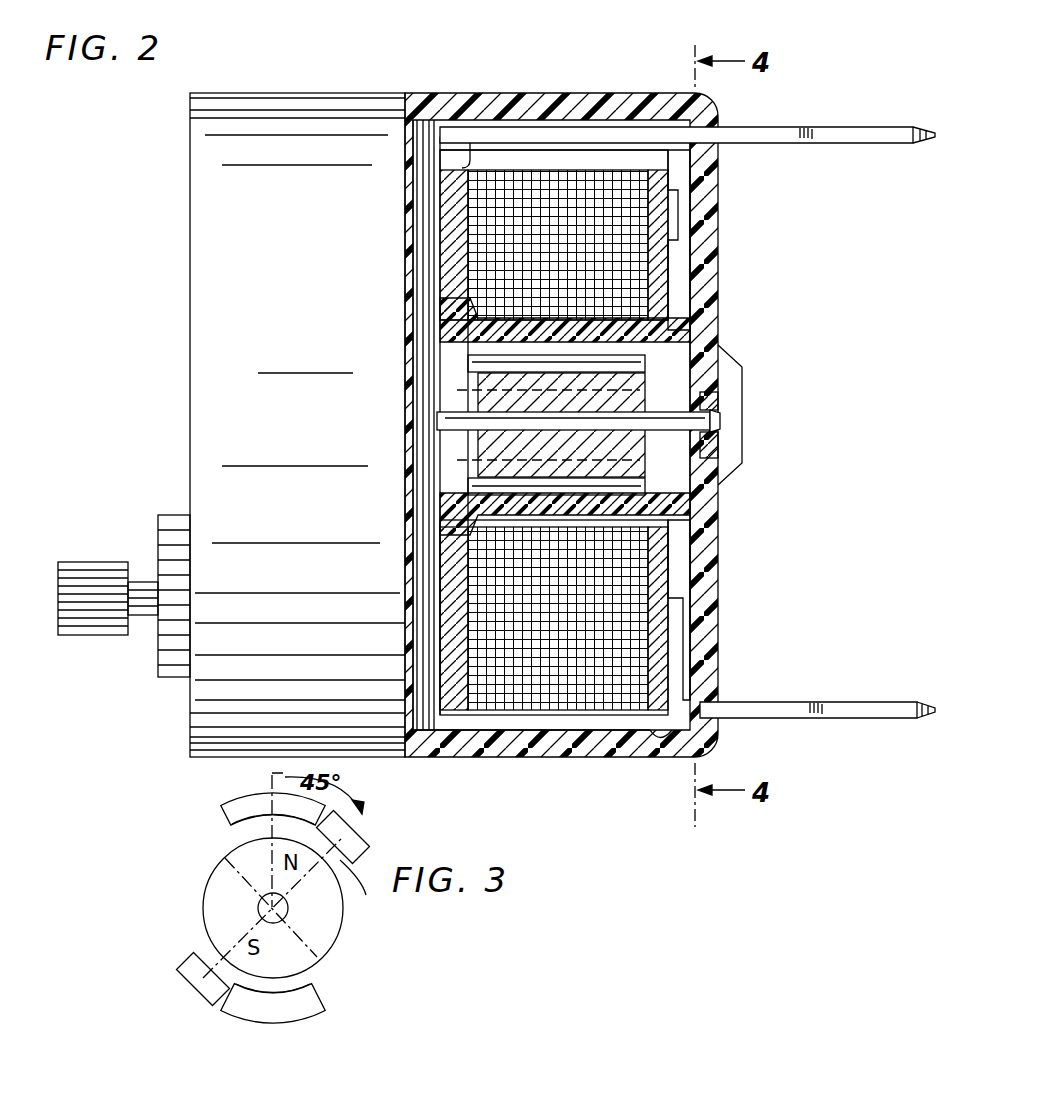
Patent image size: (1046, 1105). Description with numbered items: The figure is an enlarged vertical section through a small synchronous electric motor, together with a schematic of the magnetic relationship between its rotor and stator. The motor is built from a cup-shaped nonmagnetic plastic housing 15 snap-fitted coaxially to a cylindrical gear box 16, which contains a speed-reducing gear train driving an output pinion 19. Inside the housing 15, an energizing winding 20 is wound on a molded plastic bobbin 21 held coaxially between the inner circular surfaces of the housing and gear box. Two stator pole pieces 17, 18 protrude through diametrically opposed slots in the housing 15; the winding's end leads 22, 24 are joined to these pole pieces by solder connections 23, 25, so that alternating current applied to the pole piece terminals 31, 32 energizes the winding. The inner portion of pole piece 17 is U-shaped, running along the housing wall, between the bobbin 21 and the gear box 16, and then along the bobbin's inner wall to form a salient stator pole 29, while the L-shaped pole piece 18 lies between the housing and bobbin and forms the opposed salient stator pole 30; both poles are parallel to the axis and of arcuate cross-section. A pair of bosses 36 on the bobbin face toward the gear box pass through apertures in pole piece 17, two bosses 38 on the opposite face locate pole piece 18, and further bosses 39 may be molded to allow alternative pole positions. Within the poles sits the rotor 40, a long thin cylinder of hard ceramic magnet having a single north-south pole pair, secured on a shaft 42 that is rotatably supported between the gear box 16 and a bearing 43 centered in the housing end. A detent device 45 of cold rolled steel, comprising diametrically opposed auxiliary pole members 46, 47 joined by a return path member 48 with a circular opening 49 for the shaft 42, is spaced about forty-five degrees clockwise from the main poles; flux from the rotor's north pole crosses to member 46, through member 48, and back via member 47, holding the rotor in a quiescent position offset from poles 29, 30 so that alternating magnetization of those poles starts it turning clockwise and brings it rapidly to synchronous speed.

In FIG. 2, the housing 15 is at (576, 92).
In FIG. 2, the gear box 16 is at (312, 96).
In FIG. 2, the stator pole piece 17 is at (826, 125).
In FIG. 3, the stator pole piece 17 is at (242, 796).
In FIG. 2, the stator pole piece 18 is at (846, 700).
In FIG. 3, the stator pole piece 18 is at (308, 1021).
In FIG. 2, the output pinion 19 is at (98, 562).
In FIG. 2, the energizing winding 20 is at (545, 180).
In FIG. 2, the bobbin 21 is at (655, 160).
In FIG. 2, the end lead 22 is at (476, 160).
In FIG. 2, the solder connection 23 is at (460, 162).
In FIG. 2, the end lead 24 is at (650, 722).
In FIG. 2, the solder connection 25 is at (684, 748).
In FIG. 2, the salient stator pole 29 is at (705, 305).
In FIG. 3, the salient stator pole 29 is at (237, 815).
In FIG. 2, the salient stator pole 30 is at (683, 512).
In FIG. 3, the salient stator pole 30 is at (232, 1016).
In FIG. 2, the pole piece terminal 31 is at (918, 128).
In FIG. 2, the pole piece terminal 32 is at (930, 700).
In FIG. 2, the bosses 36 is at (455, 330).
In FIG. 2, the bosses 38 is at (688, 628).
In FIG. 2, the further bosses 39 is at (680, 222).
In FIG. 2, the rotor 40 is at (480, 455).
In FIG. 3, the rotor 40 is at (203, 898).
In FIG. 2, the shaft 42 is at (460, 416).
In FIG. 3, the shaft 42 is at (287, 907).
In FIG. 2, the bearing 43 is at (722, 405).
In FIG. 2, the detent device 45 is at (665, 352).
In FIG. 3, the detent device 45 is at (356, 830).
In FIG. 2, the auxiliary pole member 46 is at (470, 360).
In FIG. 3, the auxiliary pole member 46 is at (353, 858).
In FIG. 3, the auxiliary pole member 47 is at (185, 963).
In FIG. 2, the return path member 48 is at (745, 372).
In FIG. 2, the circular opening 49 is at (717, 457).